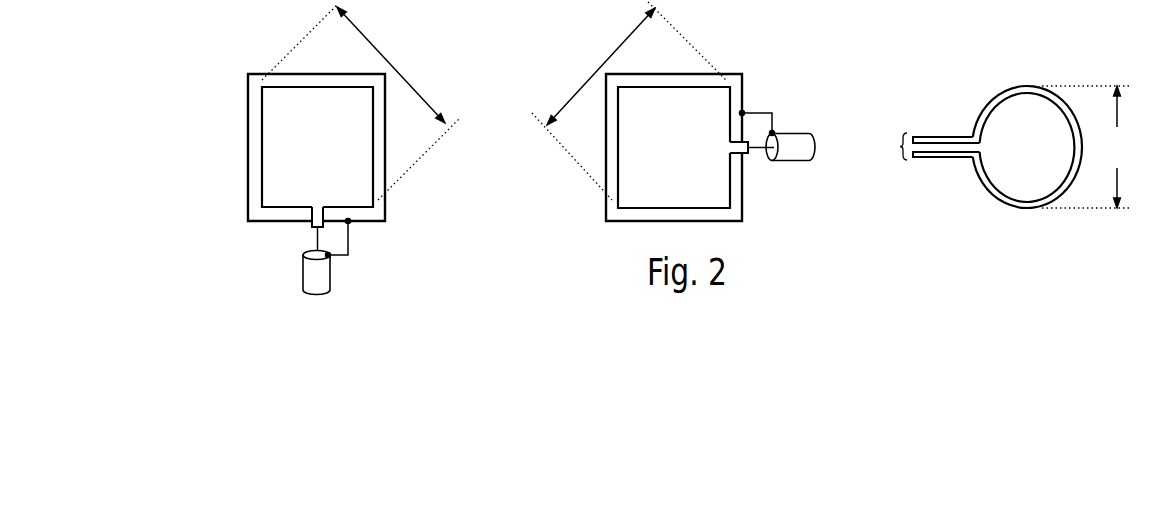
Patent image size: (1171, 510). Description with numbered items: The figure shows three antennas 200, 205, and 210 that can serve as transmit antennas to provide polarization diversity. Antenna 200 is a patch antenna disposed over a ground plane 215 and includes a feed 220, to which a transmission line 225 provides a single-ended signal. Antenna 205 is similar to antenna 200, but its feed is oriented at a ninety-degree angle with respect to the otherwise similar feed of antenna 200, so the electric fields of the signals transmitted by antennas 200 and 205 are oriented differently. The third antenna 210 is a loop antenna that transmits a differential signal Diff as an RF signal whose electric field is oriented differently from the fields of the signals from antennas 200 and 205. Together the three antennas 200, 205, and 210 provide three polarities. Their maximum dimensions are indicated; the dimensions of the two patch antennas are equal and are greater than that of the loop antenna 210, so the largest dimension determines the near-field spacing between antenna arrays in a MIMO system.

The antenna 200 is at (332, 171).
The antenna 205 is at (689, 171).
The loop antenna 210 is at (1057, 170).
The ground plane 215 is at (248, 145).
The feed 220 is at (312, 222).
The transmission line 225 is at (330, 265).